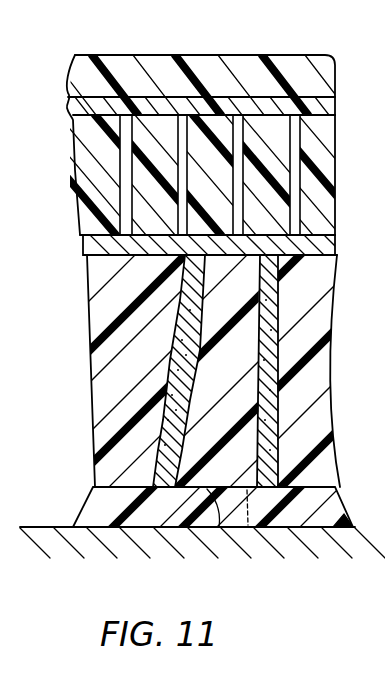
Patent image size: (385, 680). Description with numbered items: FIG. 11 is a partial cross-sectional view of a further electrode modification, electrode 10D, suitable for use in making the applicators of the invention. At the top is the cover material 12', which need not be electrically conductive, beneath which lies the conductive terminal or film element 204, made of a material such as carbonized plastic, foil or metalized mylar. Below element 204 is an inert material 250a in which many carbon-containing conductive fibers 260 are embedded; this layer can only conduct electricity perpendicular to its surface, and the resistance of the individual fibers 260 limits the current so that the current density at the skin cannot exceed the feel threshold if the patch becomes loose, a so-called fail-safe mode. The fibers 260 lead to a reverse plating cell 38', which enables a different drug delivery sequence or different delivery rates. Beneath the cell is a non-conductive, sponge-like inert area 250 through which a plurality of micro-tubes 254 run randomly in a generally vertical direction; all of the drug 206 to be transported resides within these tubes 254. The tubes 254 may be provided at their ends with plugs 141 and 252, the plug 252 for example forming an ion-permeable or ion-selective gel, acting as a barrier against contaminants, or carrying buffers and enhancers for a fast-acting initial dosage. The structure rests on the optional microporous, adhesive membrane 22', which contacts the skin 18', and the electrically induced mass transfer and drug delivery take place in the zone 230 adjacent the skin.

The electrode 10D is at (210, 48).
The cover material 12' is at (212, 131).
The conductive terminal or film element 204 is at (157, 107).
The inert material 250a is at (97, 176).
The conductive fibers 260 is at (205, 125).
The reverse plating cell 38' is at (177, 246).
The plug 141 is at (310, 237).
The non-conductive inert area 250 is at (136, 371).
The micro-tubes 254 is at (187, 325).
The drug matrix or reservoir 206 is at (167, 412).
The plug 252 is at (218, 528).
The membrane 22' is at (213, 540).
The zone 230 is at (300, 546).
The skin 18' is at (200, 521).